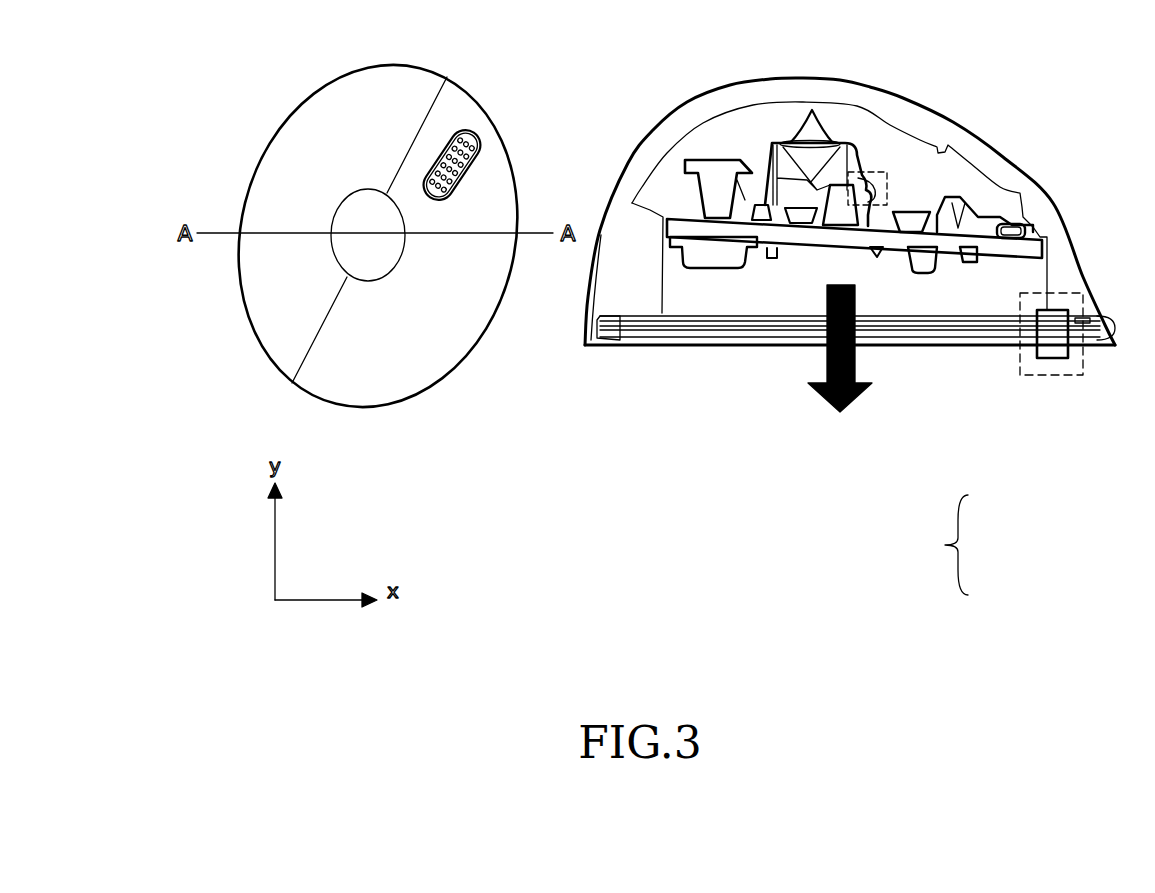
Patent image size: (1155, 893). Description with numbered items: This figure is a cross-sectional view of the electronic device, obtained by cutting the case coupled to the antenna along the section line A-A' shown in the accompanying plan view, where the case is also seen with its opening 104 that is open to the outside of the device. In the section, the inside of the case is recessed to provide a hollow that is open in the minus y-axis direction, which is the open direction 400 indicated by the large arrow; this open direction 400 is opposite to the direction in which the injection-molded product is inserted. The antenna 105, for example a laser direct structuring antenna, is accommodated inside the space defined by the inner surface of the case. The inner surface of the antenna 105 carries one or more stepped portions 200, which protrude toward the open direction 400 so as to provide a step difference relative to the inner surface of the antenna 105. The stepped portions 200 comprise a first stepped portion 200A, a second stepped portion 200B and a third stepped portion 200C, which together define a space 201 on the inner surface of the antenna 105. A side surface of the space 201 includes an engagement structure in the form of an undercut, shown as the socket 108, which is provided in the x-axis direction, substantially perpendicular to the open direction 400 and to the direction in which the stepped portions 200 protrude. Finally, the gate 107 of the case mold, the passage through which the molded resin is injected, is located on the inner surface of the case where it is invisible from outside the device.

The opening 104 is at (465, 148).
The antenna 105 is at (677, 193).
The gate 107 is at (1052, 377).
The socket 108 is at (863, 187).
The stepped portion 200 is at (964, 545).
The first stepped portion 200A is at (910, 200).
The second stepped portion 200B is at (854, 238).
The third stepped portion 200C is at (745, 200).
The space 201 is at (812, 157).
The open direction 400 is at (827, 367).